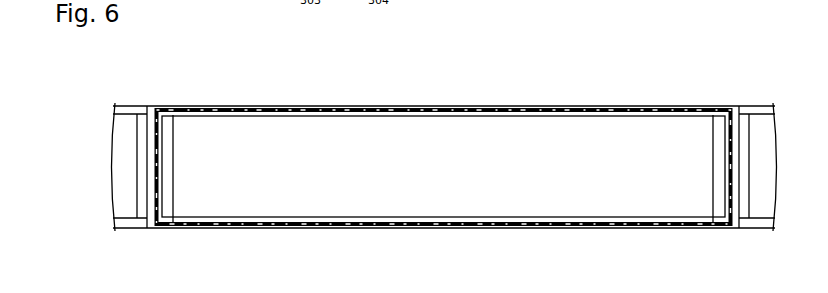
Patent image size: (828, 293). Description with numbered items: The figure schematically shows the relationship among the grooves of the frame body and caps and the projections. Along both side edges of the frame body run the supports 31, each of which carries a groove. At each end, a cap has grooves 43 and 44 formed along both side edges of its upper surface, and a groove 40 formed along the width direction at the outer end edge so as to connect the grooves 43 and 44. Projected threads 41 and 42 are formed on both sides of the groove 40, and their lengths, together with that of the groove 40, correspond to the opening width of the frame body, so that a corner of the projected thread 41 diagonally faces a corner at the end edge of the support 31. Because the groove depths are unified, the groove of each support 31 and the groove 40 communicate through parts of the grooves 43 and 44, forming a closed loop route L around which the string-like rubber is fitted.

The support 31 is at (643, 106).
The groove 40 is at (148, 117).
The projected thread 41 is at (177, 216).
The projected thread 42 is at (145, 217).
The groove 43 is at (116, 110).
The groove 44 is at (770, 110).
The loop route L is at (538, 108).